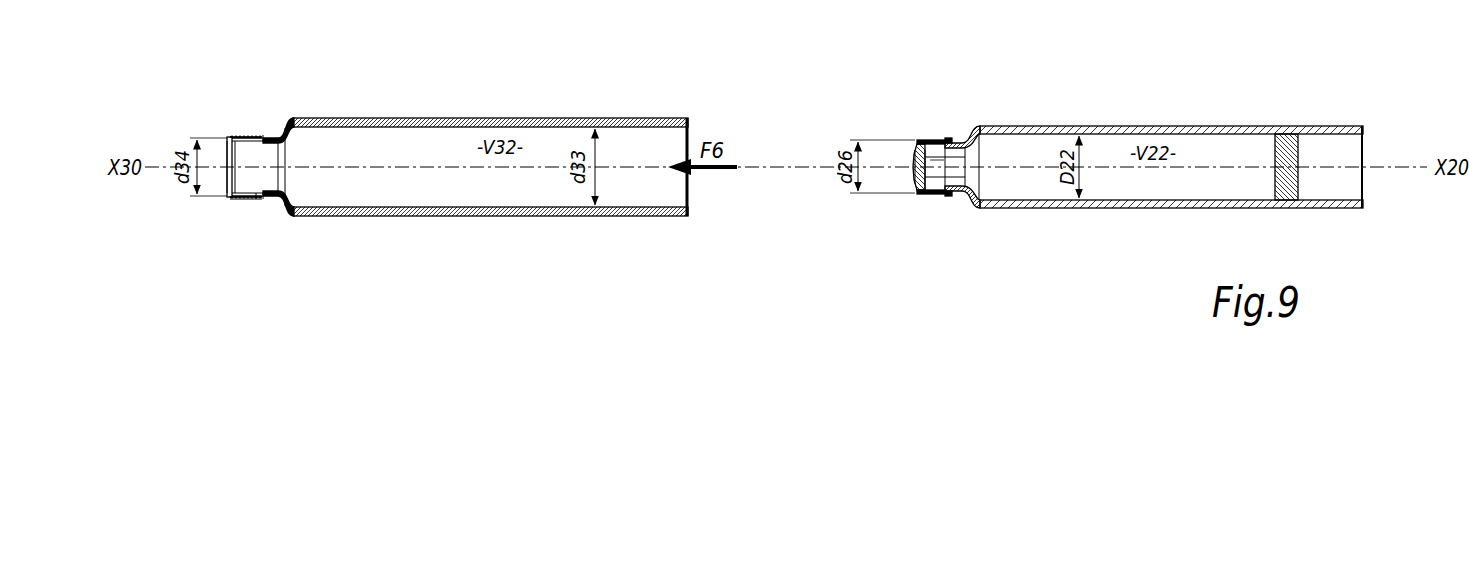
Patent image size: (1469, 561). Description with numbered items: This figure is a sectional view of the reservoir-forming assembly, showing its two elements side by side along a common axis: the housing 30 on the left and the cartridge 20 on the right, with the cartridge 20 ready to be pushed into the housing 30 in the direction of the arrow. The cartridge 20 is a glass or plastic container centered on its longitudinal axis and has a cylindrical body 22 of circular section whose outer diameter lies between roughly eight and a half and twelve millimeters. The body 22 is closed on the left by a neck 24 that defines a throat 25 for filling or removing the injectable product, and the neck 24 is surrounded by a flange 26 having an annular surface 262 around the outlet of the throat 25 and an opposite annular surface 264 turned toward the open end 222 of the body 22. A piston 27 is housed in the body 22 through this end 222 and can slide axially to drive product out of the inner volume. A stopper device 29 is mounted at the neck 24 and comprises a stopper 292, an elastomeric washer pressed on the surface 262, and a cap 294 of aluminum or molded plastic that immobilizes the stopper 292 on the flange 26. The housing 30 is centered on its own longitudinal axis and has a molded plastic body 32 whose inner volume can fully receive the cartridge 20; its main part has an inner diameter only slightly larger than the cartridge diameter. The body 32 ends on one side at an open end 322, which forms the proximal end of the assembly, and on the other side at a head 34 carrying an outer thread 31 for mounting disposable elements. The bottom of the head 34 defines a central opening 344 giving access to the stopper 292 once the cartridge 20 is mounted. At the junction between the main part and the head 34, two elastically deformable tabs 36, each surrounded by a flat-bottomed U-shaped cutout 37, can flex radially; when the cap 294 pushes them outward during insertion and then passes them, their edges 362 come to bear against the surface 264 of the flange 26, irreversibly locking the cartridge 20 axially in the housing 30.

The cartridge 20 is at (1119, 196).
The cylindrical body 22 is at (1207, 128).
The end of the body 222 is at (1364, 204).
The neck 24 is at (952, 148).
The throat 25 is at (929, 159).
The flange 26 is at (938, 196).
The annular surface 262 is at (915, 139).
The annular surface 264 is at (953, 199).
The piston 27 is at (1285, 148).
The stopper device 29 is at (855, 268).
The stopper 292 is at (914, 184).
The cap 294 is at (924, 192).
The housing 30 is at (401, 184).
The outer thread 31 is at (246, 132).
The body 32 is at (467, 121).
The open end 322 is at (670, 118).
The head 34 is at (232, 201).
The central opening 344 is at (226, 178).
The elastically deformable tabs 36 is at (268, 135).
The edge of the tab 362 is at (256, 199).
The U-shaped cutout 37 is at (293, 194).